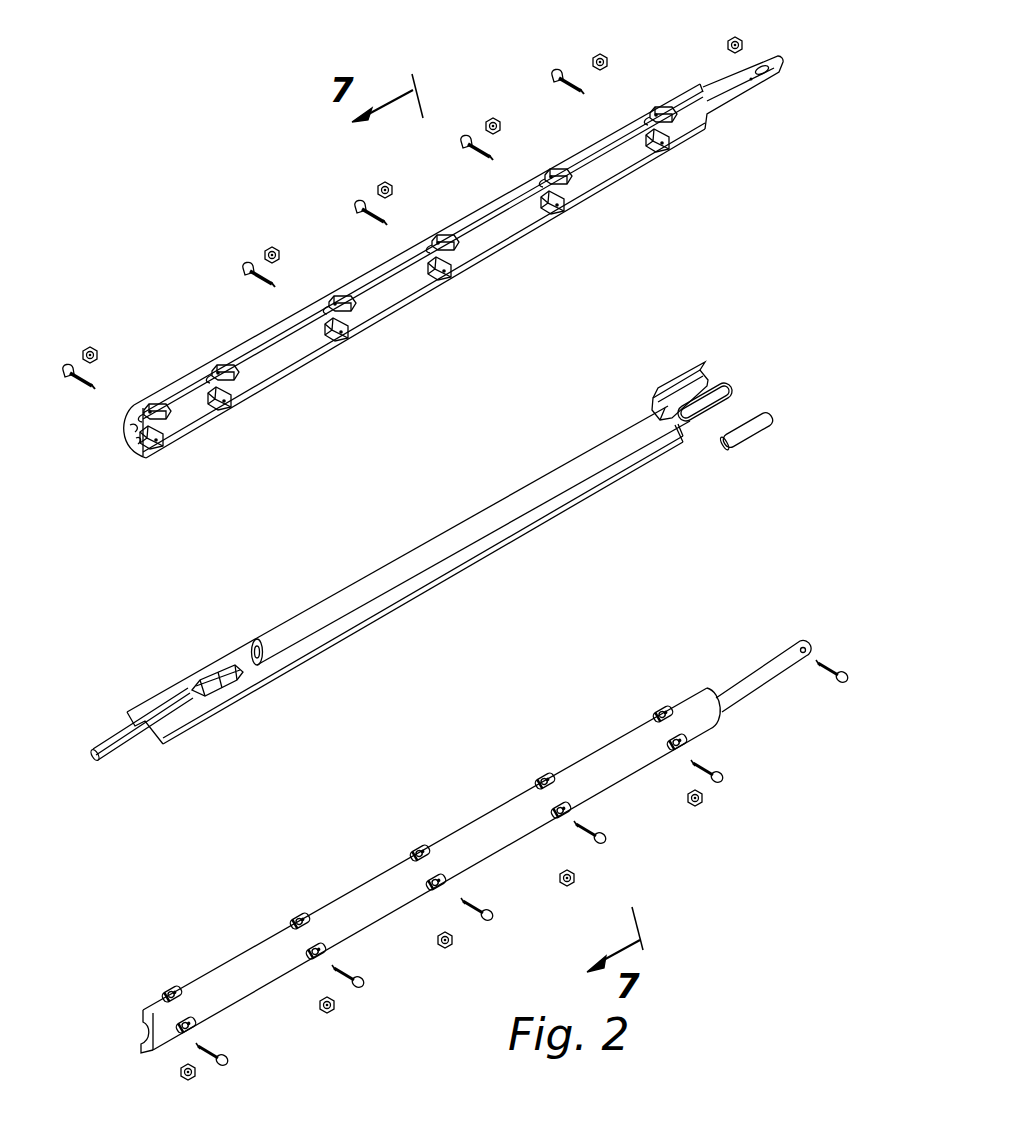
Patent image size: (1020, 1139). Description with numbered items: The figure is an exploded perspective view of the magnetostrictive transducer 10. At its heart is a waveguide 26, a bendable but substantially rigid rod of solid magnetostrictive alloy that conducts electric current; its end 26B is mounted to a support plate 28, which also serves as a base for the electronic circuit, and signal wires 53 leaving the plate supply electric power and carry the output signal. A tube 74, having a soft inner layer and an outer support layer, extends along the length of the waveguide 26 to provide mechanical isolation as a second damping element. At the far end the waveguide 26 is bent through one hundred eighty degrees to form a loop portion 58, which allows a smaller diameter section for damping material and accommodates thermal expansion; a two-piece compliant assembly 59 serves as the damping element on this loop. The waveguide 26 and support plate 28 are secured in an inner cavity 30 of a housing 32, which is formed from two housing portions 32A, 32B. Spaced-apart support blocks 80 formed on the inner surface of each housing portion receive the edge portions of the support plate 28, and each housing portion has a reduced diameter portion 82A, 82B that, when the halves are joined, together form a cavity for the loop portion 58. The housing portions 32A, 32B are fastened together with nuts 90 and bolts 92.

The magnetostrictive transducer 10 is at (116, 323).
The waveguide 26 is at (251, 655).
The end 26B is at (190, 688).
The support plate 28 is at (180, 725).
The inner cavity 30 is at (374, 293).
The housing 32 is at (131, 1064).
The housing portion 32A is at (201, 371).
The housing portion 32B is at (237, 985).
The signal wires 53 is at (128, 759).
The loop portion 58 is at (732, 388).
The two-piece compliant assembly 59 is at (674, 379).
The tube 74 is at (548, 476).
The support blocks 80 is at (162, 439).
The reduced diameter portion 82A is at (730, 82).
The reduced diameter portion 82B is at (755, 673).
The nuts 90 is at (493, 118).
The bolts 92 is at (555, 85).